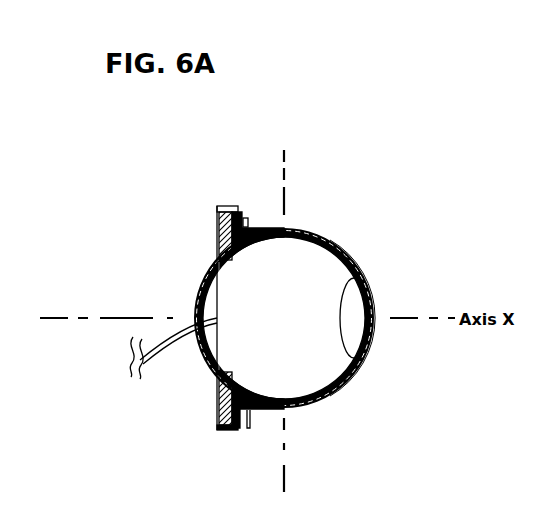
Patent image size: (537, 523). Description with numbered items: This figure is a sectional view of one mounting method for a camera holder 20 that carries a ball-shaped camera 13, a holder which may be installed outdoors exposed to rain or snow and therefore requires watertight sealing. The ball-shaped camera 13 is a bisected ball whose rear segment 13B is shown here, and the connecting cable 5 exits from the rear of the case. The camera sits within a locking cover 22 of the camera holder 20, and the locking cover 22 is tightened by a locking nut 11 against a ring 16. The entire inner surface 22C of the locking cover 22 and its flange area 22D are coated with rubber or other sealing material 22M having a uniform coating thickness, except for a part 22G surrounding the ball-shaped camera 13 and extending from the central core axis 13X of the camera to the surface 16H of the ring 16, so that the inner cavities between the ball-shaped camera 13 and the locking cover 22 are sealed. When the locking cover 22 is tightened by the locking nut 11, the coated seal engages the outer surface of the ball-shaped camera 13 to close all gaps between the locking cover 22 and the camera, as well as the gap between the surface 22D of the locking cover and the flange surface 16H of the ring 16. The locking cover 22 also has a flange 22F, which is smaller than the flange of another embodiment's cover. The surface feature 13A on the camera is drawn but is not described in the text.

The connecting cable 5 is at (200, 317).
The locking nut 11 is at (220, 206).
The ball-shaped camera 13 is at (328, 362).
The valve opening 13A is at (358, 302).
The rear segment 13B is at (243, 345).
The central core axis 13X is at (291, 334).
The ring 16 is at (219, 230).
The flange surface of ring 16H is at (219, 240).
The camera holder 20 is at (450, 140).
The locking cover 22 is at (303, 228).
The inner surface of locking cover 22C is at (357, 262).
The flange area of locking cover 22D is at (246, 218).
The flange of locking cover 22F is at (238, 432).
The uncoated part 22G is at (242, 402).
The sealing material 22M is at (235, 206).